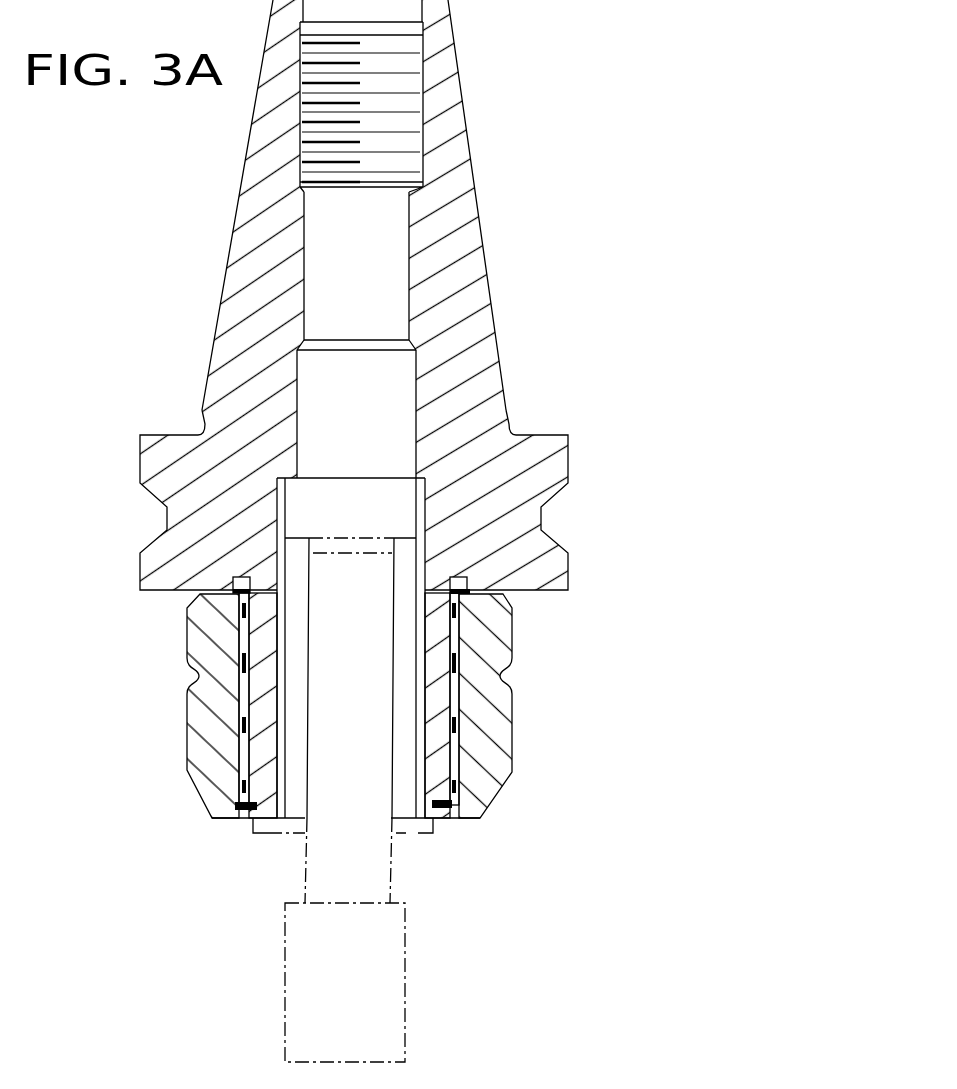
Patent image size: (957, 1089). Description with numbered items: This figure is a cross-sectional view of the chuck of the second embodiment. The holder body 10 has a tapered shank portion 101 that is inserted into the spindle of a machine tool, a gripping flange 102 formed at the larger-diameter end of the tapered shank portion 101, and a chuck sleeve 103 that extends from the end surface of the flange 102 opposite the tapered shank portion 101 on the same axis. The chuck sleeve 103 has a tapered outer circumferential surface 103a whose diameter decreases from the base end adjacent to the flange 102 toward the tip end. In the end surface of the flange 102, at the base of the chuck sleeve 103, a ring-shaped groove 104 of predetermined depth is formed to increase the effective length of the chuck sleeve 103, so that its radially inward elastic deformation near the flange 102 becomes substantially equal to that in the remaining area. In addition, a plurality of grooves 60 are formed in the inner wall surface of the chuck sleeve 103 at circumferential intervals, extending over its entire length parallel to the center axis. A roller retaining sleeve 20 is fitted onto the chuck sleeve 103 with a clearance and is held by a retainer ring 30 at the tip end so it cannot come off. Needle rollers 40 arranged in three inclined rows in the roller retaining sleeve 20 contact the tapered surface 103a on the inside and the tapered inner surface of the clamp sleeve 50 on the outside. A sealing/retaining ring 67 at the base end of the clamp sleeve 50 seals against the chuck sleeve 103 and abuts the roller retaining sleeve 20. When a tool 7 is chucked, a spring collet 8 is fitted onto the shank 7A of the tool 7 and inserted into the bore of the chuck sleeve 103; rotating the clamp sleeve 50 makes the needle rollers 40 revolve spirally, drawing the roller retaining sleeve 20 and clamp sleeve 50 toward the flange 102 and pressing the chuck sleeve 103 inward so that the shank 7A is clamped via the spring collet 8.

The tool 7 is at (290, 987).
The shank of the tool 7A is at (323, 870).
The spring collet 8 is at (260, 835).
The holder body 10 is at (478, 203).
The roller retaining sleeve 20 is at (245, 672).
The retainer ring 30 is at (445, 823).
The needle rollers 40 is at (230, 755).
The clamp sleeve 50 is at (497, 742).
The grooves 60 is at (427, 762).
The sealing/retaining ring 67 is at (478, 597).
The tapered shank portion 101 is at (467, 276).
The gripping flange 102 is at (540, 445).
The chuck sleeve 103 is at (396, 824).
The tapered outer circumferential surface 103a is at (450, 690).
The ring-shaped groove 104 is at (461, 577).